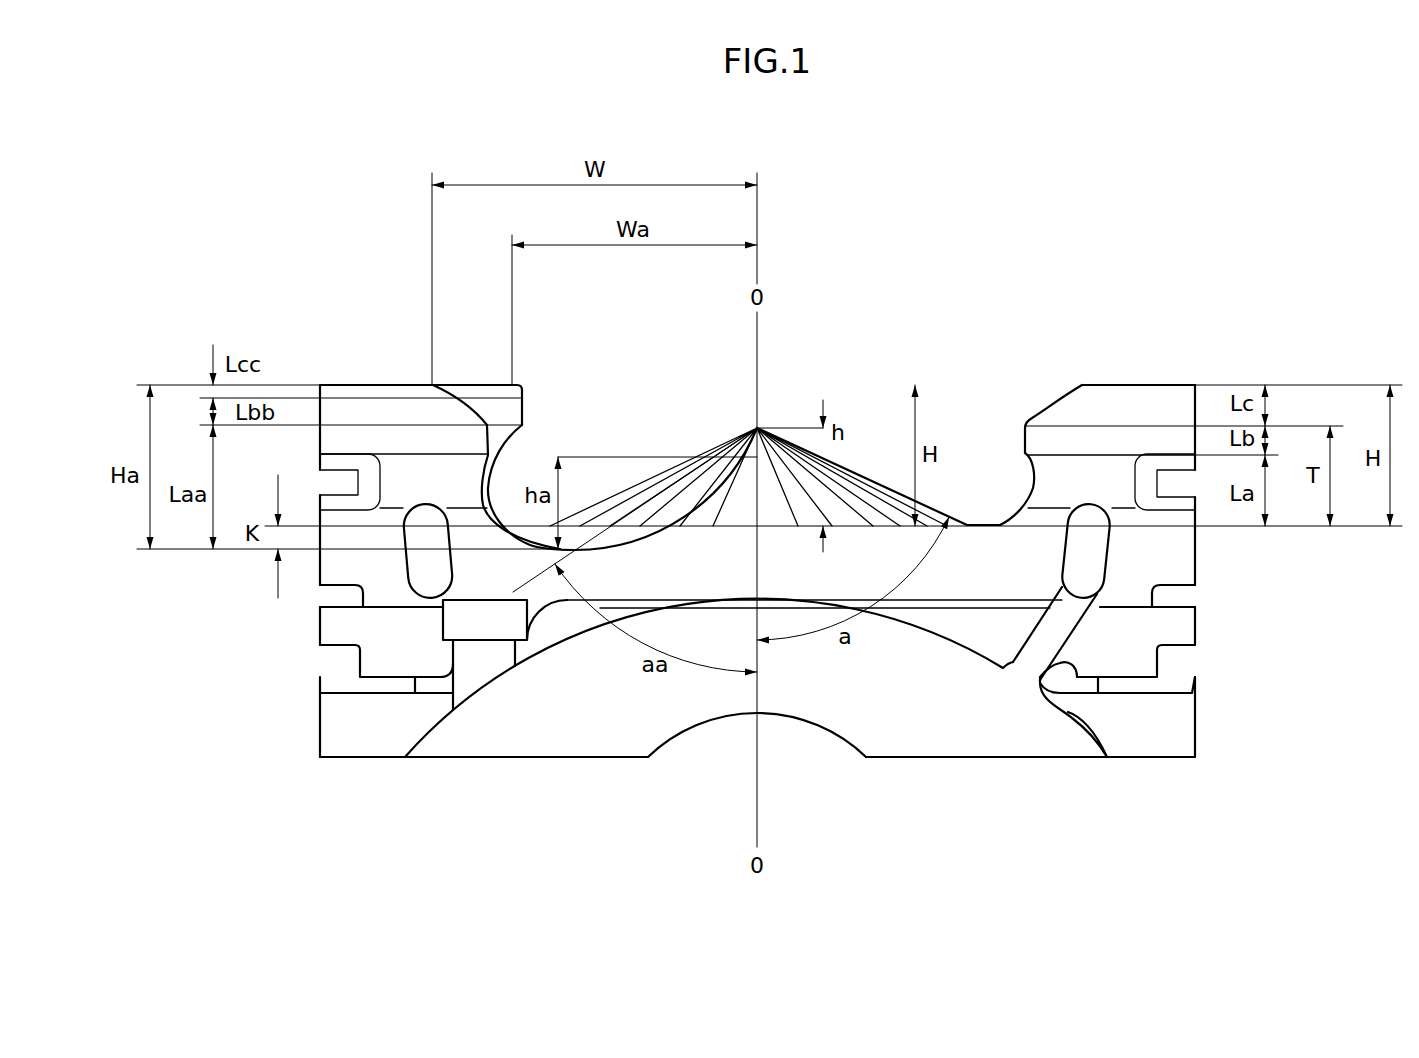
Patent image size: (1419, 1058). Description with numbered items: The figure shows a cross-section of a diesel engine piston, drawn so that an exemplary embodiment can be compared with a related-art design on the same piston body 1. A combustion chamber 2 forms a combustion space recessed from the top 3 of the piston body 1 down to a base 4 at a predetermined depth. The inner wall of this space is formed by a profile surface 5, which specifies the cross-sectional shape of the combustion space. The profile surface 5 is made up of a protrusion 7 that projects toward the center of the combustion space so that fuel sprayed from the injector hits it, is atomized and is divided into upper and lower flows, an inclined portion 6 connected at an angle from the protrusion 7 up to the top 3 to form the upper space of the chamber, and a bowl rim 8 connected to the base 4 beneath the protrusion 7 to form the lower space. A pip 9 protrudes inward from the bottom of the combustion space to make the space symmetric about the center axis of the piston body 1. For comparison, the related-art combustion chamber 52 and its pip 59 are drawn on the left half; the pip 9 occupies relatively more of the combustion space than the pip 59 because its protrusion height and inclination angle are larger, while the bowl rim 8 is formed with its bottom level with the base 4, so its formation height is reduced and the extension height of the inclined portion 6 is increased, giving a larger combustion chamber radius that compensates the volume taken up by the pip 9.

The piston body 1 is at (1177, 557).
The combustion chamber 2 is at (888, 428).
The top 3 is at (1152, 385).
The base 4 is at (1018, 513).
The profile surface 5 is at (932, 303).
The inclined portion 6 is at (1060, 403).
The protrusion 7 is at (1028, 488).
The bowl rim 8 is at (1018, 513).
The pip 9 is at (868, 477).
The combustion chamber 52 is at (595, 420).
The pip 59 is at (745, 425).